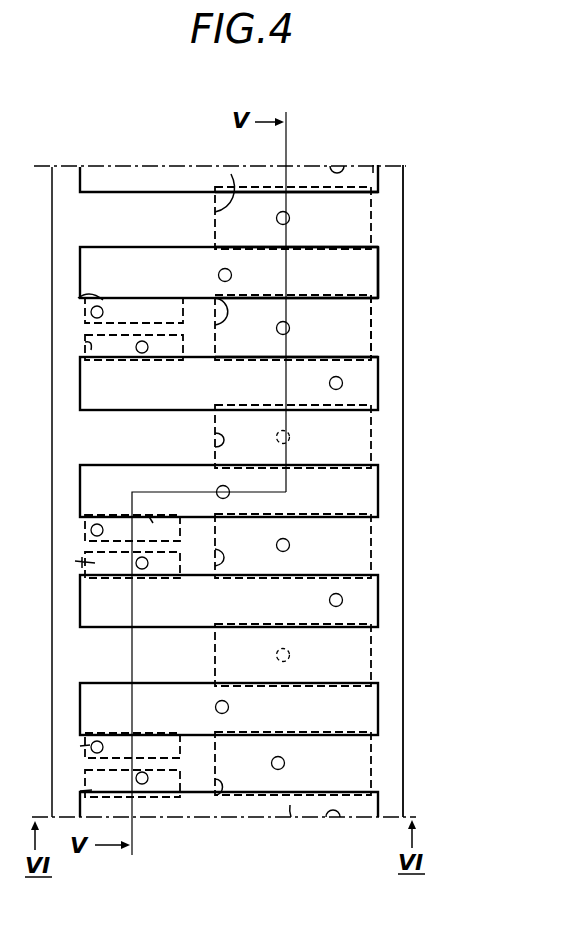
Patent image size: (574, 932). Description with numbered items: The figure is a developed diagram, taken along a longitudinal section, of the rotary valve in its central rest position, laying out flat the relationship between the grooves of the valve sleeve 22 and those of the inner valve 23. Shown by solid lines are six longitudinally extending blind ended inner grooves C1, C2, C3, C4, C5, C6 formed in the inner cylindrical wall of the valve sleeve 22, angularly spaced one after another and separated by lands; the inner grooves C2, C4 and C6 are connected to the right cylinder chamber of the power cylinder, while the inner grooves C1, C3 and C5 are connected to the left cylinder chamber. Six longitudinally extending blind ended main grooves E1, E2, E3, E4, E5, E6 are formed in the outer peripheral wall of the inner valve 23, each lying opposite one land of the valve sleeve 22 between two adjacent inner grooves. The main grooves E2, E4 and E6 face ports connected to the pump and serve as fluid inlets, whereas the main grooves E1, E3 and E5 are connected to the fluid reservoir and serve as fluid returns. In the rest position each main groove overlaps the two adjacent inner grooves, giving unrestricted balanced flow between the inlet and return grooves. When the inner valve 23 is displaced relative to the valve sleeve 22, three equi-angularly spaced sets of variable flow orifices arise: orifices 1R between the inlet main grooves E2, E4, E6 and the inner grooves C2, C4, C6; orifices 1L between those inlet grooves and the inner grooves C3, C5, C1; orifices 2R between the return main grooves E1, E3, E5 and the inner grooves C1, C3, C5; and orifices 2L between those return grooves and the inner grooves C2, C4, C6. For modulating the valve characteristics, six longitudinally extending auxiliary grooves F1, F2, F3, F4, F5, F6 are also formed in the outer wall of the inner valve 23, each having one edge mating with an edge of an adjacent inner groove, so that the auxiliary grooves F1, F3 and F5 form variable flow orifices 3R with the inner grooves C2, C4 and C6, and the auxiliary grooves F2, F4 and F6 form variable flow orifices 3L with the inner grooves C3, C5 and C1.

The inner groove C1 is at (373, 172).
The inner groove C2 is at (344, 283).
The inner groove C3 is at (258, 397).
The inner groove C4 is at (344, 505).
The inner groove C5 is at (278, 614).
The inner groove C6 is at (298, 723).
The main groove E1 is at (231, 174).
The main groove E2 is at (215, 298).
The main groove E3 is at (213, 440).
The main groove E4 is at (213, 566).
The main groove E5 is at (317, 667).
The main groove E6 is at (219, 798).
The auxiliary groove F1 is at (80, 297).
The auxiliary groove F2 is at (86, 347).
The auxiliary groove F3 is at (153, 523).
The auxiliary groove F4 is at (76, 561).
The auxiliary groove F5 is at (82, 746).
The auxiliary groove F6 is at (82, 791).
The variable flow orifice 3R is at (134, 517).
The variable flow orifice 3L is at (134, 577).
The variable flow orifice 2R is at (361, 202).
The variable flow orifice 2L is at (361, 234).
The valve sleeve 22 is at (370, 267).
The inner valve 23 is at (372, 313).
The variable flow orifice 1R is at (361, 313).
The variable flow orifice 1L is at (361, 340).